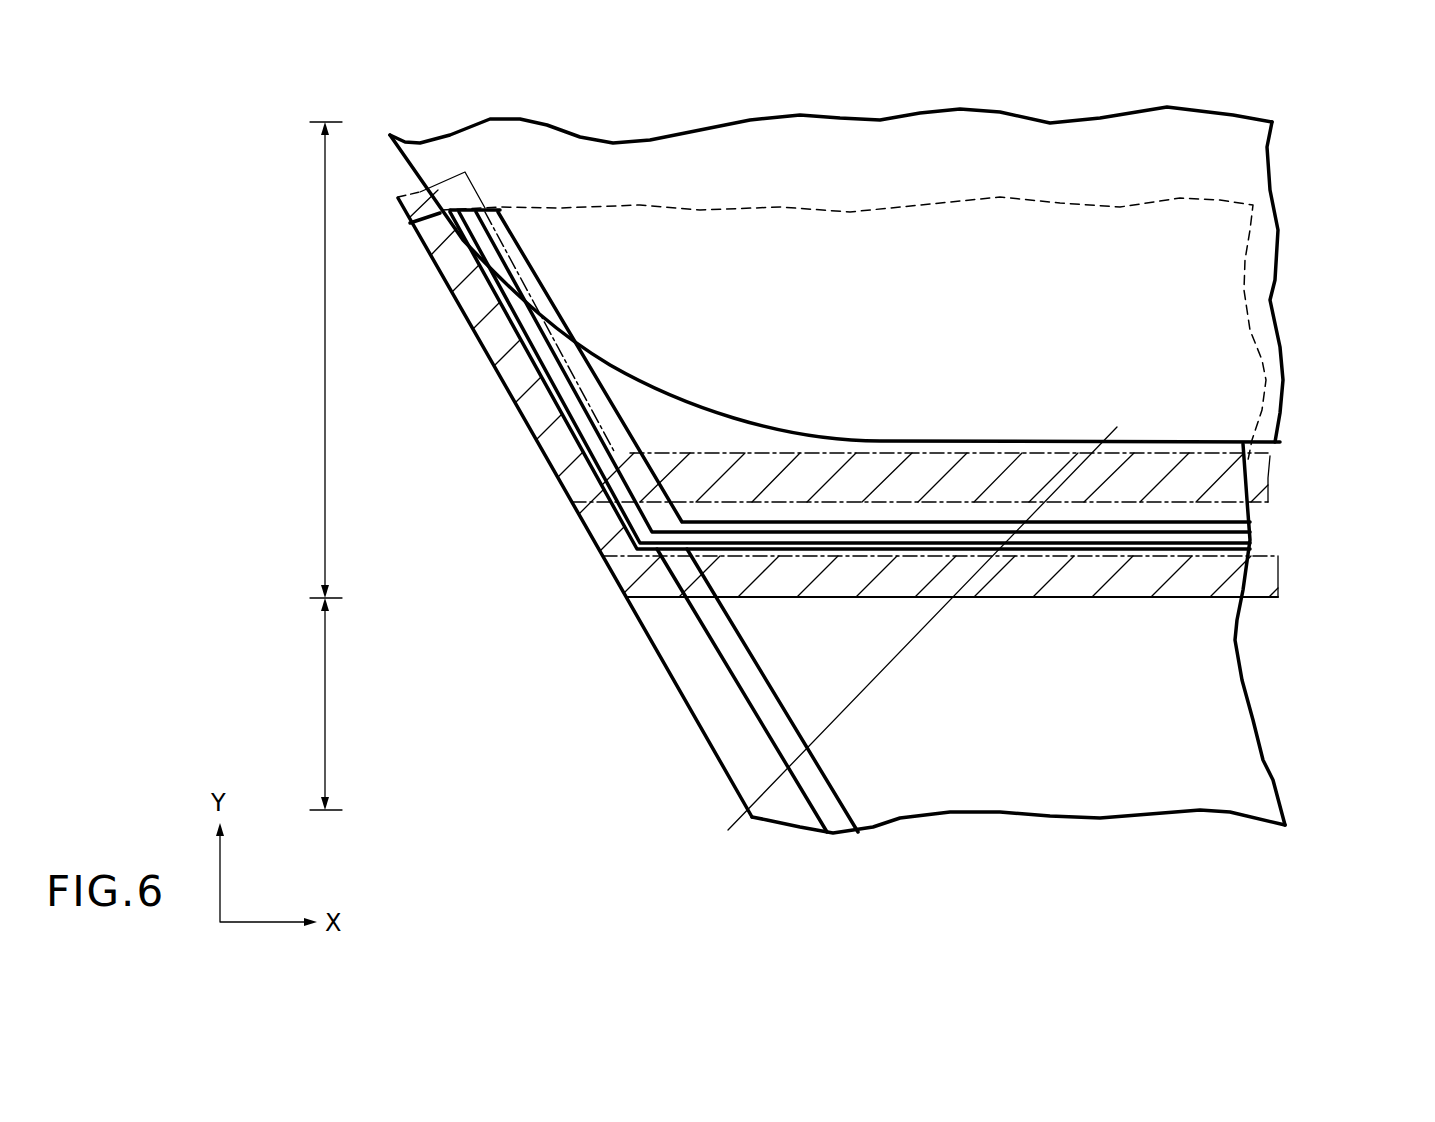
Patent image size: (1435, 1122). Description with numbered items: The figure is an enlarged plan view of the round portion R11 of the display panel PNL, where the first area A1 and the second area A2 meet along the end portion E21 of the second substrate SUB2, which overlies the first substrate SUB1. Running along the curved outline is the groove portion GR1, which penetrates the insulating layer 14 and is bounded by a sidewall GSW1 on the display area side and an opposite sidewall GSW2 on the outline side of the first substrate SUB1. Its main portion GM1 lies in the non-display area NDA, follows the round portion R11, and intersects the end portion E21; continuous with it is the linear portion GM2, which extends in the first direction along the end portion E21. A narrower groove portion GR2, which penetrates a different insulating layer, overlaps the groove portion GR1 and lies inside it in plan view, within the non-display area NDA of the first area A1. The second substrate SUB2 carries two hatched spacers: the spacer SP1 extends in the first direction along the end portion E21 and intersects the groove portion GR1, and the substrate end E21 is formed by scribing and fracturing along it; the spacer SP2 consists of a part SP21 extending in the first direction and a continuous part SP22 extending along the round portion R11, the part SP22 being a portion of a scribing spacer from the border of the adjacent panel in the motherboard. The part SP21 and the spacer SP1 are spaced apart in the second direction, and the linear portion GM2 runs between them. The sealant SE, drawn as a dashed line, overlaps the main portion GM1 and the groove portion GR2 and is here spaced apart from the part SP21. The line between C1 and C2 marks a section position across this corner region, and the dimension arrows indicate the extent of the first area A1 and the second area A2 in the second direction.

The non-display area NDA is at (884, 114).
The display panel PNL is at (1322, 226).
The sealant SE is at (1270, 298).
The second substrate SUB2 is at (1313, 437).
The first substrate SUB1 is at (1308, 672).
The spacer SP2 is at (1275, 480).
The part of spacer SP2 SP21 is at (818, 446).
The part of spacer SP2 SP22 is at (512, 445).
The spacer SP1 is at (1282, 577).
The groove portion GR1 is at (630, 398).
The groove portion GR2 is at (638, 465).
The main portion GM1 is at (733, 612).
The linear portion GM2 is at (931, 520).
The sidewall GSW1 is at (742, 662).
The sidewall GSW2 is at (765, 705).
The end portion E21 is at (650, 610).
The cut line end C1 is at (912, 644).
The cut line end C2 is at (1120, 412).
The round portion R11 is at (484, 390).
The insulating layer 14 is at (1265, 781).
The first area A1 is at (315, 360).
The second area A2 is at (315, 704).